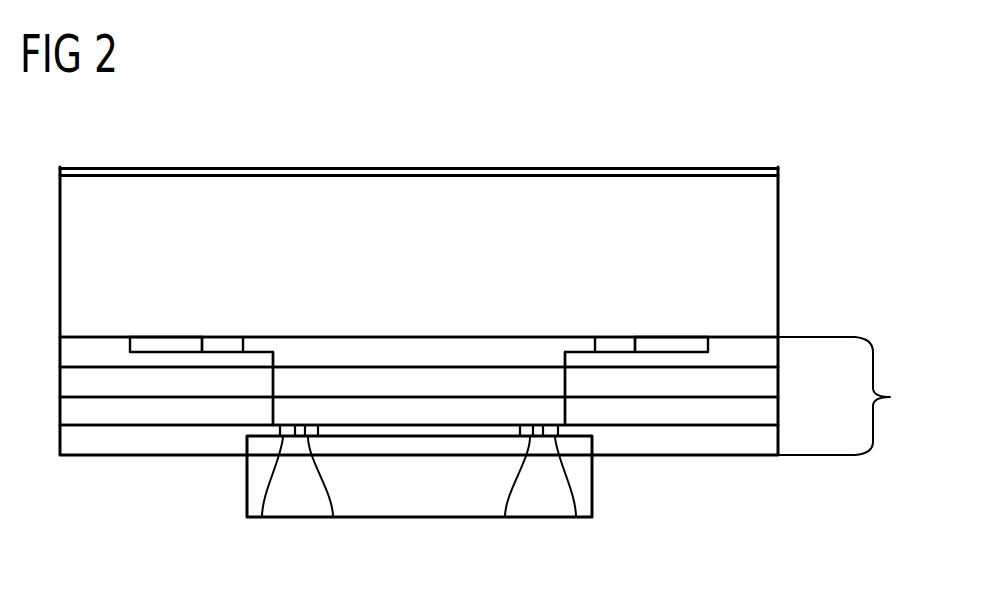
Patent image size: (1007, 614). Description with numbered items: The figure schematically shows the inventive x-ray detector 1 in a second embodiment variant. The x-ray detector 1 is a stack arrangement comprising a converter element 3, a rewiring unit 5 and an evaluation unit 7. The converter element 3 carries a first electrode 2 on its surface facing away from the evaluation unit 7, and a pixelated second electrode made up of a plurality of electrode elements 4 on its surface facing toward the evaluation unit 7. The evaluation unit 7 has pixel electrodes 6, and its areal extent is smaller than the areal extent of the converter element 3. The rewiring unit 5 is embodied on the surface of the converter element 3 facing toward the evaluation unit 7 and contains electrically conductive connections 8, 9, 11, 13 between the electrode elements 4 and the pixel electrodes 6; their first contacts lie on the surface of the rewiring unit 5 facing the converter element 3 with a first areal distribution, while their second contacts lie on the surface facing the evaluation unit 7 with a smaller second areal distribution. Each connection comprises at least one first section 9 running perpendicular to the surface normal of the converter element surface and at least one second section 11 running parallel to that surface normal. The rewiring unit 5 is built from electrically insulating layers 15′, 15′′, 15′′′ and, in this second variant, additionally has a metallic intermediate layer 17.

The x-ray detector 1 is at (826, 128).
The first electrode 2 is at (640, 172).
The converter element 3 is at (768, 240).
The electrode elements 4 is at (165, 340).
The rewiring unit 5 is at (488, 375).
The pixel electrodes 6 is at (333, 517).
The evaluation unit 7 is at (421, 518).
The electrically conductive connections 8 is at (420, 416).
The first section 9 is at (243, 340).
The second section 11 is at (273, 409).
The electrically conductive connections 13 is at (262, 517).
The electrically insulating layer 15′ is at (762, 351).
The electrically insulating layer 15′′ is at (762, 410).
The electrically insulating layer 15′′′ is at (750, 442).
The metallic intermediate layer 17 is at (762, 380).